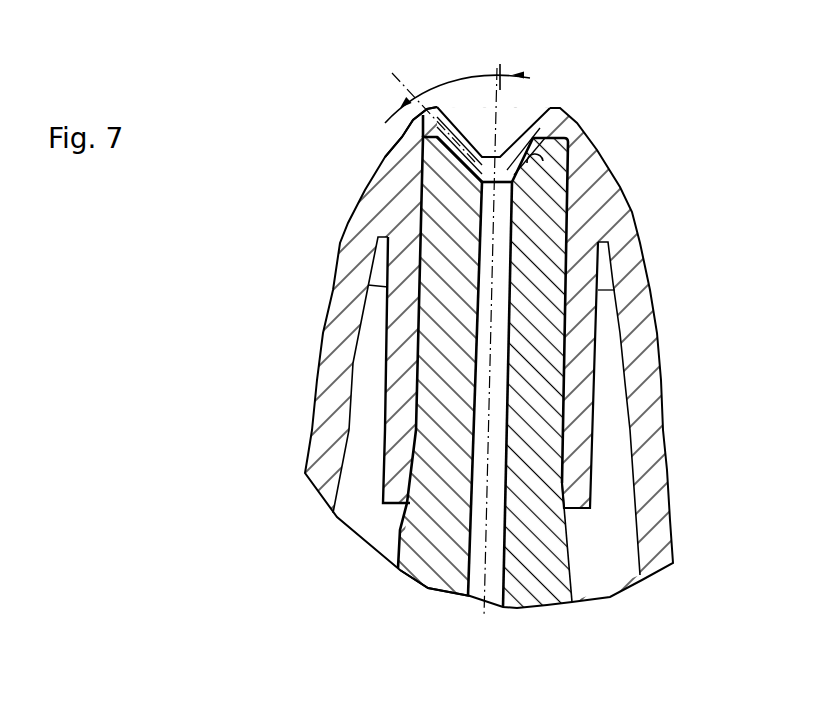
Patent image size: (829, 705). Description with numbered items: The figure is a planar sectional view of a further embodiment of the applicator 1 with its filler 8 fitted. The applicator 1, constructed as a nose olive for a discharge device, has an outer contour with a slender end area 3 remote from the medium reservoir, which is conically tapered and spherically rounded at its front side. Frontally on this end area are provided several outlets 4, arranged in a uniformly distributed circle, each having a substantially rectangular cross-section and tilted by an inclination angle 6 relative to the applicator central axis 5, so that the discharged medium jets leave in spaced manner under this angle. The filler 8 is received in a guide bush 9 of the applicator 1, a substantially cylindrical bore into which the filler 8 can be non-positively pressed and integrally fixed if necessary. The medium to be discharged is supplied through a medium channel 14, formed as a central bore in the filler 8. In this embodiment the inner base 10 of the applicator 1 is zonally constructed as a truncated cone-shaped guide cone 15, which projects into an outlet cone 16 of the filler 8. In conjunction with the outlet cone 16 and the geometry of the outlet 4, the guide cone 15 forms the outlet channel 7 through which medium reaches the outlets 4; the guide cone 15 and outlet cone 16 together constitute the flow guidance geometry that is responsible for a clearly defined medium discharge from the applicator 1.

The applicator 1 is at (618, 107).
The end area 3 is at (330, 337).
The outlets 4 is at (415, 120).
The applicator central axis 5 is at (483, 572).
The inclination angle 6 is at (438, 93).
The outlet channel 7 is at (448, 143).
The filler 8 is at (446, 389).
The guide bush 9 is at (583, 363).
The inner base 10 is at (503, 158).
The medium channel 14 is at (497, 535).
The guide cone 15 is at (487, 128).
The outlet cone 16 is at (547, 150).